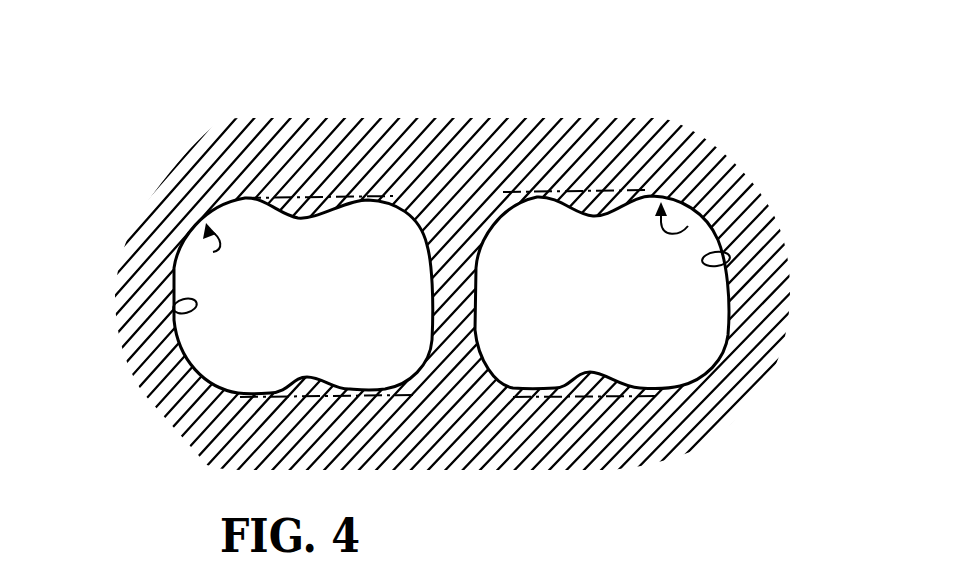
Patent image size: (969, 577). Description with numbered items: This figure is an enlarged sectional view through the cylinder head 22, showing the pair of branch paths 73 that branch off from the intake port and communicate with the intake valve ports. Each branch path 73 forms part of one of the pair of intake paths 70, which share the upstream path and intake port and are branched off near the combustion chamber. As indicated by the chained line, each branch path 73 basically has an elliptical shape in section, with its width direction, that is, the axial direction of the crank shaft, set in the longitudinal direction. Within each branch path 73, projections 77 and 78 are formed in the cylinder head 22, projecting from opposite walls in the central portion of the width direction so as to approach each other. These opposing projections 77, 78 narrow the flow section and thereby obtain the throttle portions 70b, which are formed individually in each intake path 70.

The cylinder head 22 is at (500, 133).
The intake path 70 is at (190, 245).
The throttle portion 70b is at (328, 313).
The branch path 73 is at (173, 312).
The projection 77 is at (317, 222).
The projection 78 is at (307, 373).